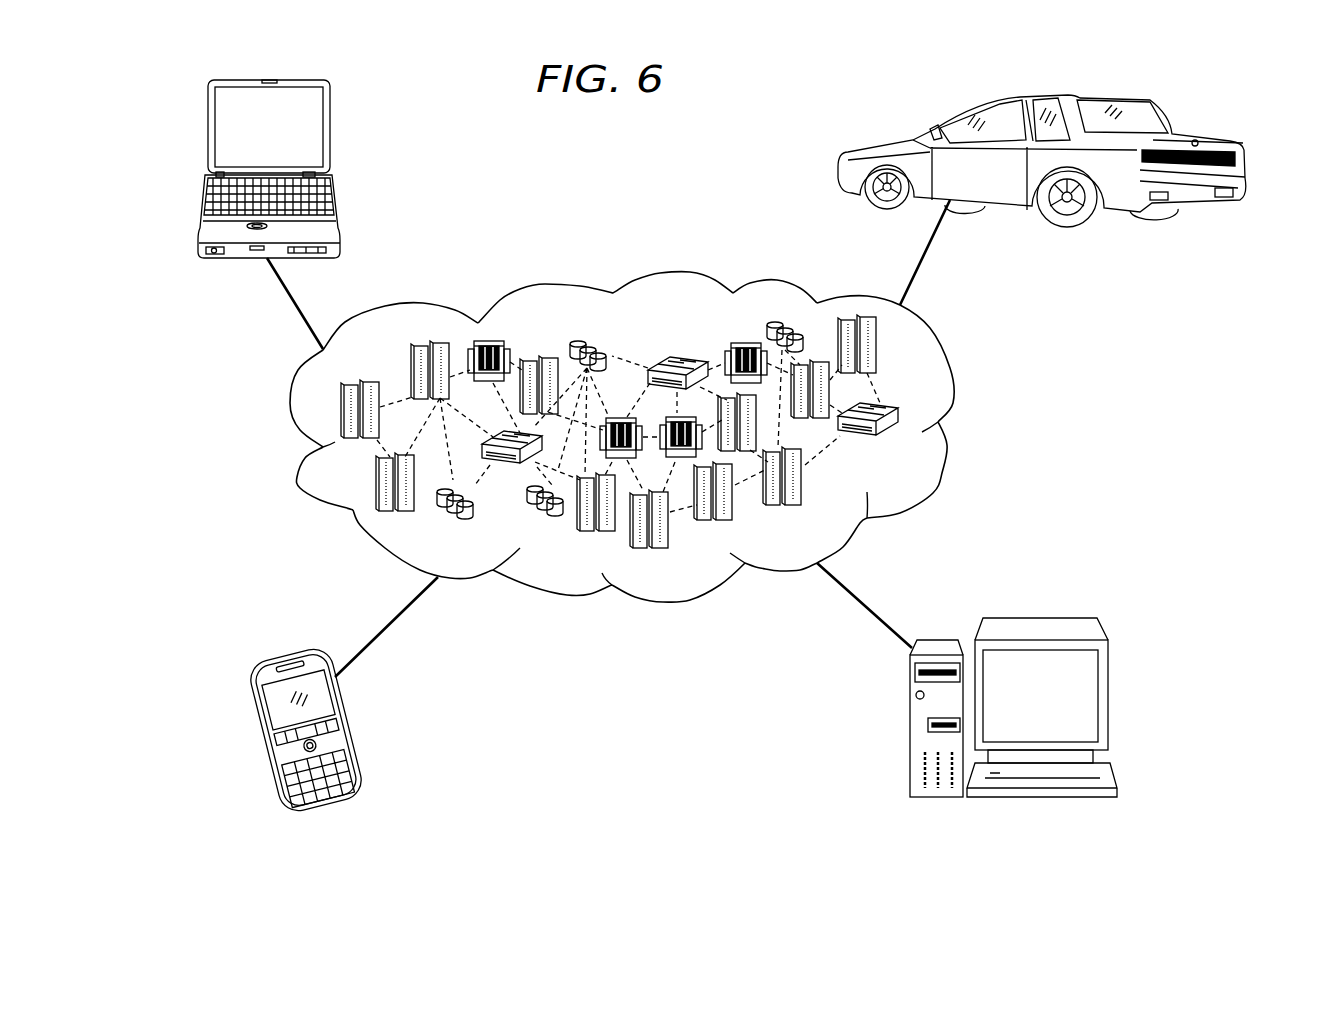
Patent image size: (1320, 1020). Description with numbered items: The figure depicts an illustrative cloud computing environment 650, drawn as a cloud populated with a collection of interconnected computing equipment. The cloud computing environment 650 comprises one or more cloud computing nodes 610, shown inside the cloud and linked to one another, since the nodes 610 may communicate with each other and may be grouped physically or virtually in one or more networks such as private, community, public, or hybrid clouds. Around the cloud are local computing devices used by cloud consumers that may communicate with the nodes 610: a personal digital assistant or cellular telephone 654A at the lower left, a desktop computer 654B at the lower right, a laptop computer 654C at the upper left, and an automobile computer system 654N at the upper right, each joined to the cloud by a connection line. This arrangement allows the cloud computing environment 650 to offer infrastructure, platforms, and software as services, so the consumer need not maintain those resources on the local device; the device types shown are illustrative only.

The cloud computing environment 650 is at (948, 368).
The cloud computing nodes 610 is at (903, 443).
The personal digital assistant (PDA) or cellular telephone 654A is at (248, 720).
The desktop computer 654B is at (1042, 618).
The laptop computer 654C is at (208, 121).
The automobile computer system 654N is at (1205, 136).